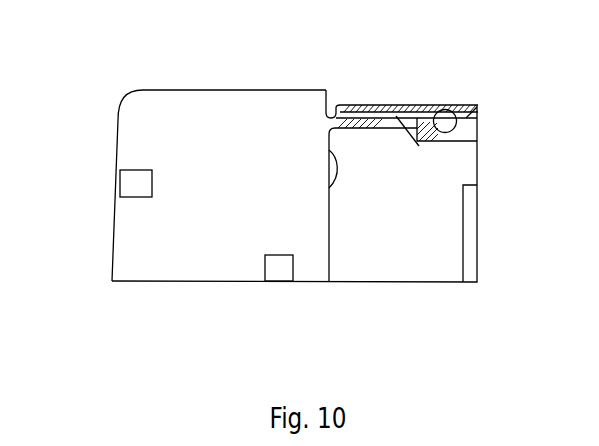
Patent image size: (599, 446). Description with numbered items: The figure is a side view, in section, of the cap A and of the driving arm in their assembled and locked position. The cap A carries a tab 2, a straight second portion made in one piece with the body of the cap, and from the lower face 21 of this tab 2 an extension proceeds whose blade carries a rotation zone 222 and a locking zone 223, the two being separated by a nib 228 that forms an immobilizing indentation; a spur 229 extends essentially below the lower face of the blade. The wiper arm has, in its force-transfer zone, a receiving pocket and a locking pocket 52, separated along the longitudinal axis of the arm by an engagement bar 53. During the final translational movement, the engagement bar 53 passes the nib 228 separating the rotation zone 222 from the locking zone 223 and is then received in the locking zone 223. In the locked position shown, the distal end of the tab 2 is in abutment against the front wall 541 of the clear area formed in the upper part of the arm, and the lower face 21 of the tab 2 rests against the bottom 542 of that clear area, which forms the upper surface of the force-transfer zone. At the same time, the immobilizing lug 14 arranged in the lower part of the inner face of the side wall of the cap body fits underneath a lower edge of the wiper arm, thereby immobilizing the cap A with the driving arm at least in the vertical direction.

The tab 2 is at (413, 106).
The lower face 21 is at (332, 97).
The engagement bar 53 is at (438, 118).
The front wall 541 is at (478, 118).
The rotation zone 222 is at (451, 146).
The nib 228 is at (436, 142).
The locking zone 223 is at (411, 143).
The spur 229 is at (398, 126).
The locking pocket 52 is at (391, 126).
The bottom 542 is at (388, 128).
The immobilizing lug 14 is at (135, 183).
The cap A is at (100, 183).